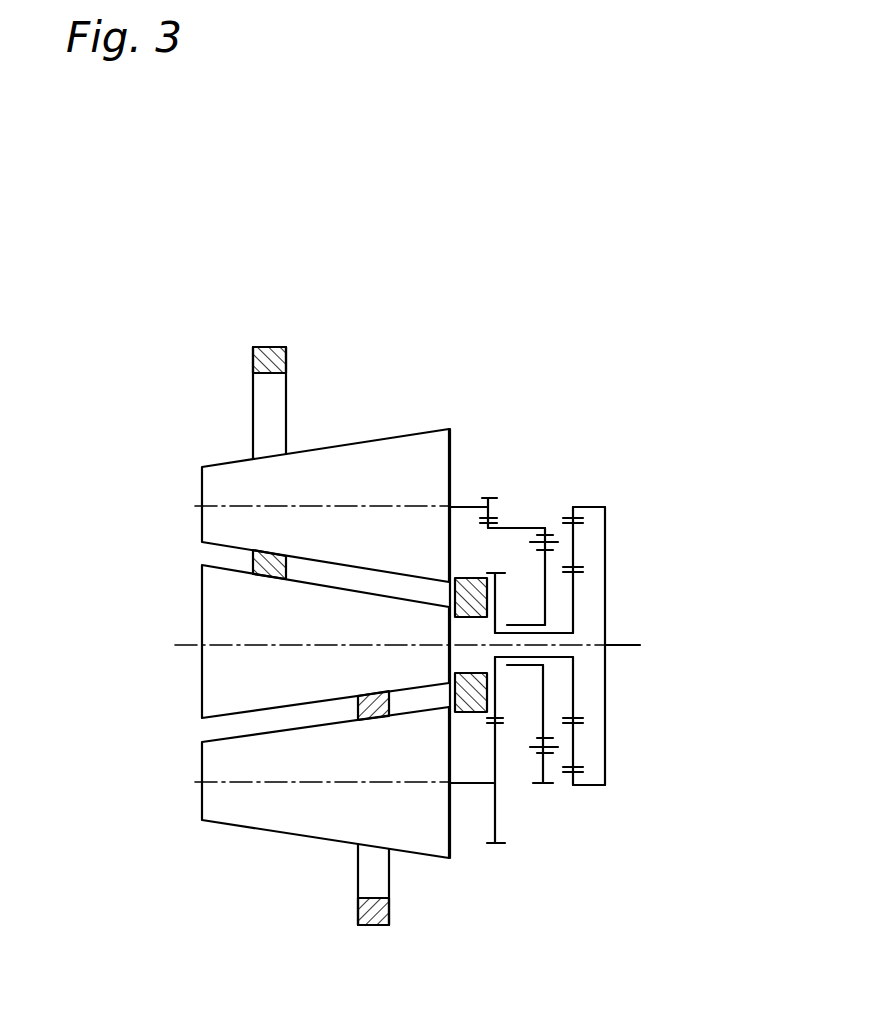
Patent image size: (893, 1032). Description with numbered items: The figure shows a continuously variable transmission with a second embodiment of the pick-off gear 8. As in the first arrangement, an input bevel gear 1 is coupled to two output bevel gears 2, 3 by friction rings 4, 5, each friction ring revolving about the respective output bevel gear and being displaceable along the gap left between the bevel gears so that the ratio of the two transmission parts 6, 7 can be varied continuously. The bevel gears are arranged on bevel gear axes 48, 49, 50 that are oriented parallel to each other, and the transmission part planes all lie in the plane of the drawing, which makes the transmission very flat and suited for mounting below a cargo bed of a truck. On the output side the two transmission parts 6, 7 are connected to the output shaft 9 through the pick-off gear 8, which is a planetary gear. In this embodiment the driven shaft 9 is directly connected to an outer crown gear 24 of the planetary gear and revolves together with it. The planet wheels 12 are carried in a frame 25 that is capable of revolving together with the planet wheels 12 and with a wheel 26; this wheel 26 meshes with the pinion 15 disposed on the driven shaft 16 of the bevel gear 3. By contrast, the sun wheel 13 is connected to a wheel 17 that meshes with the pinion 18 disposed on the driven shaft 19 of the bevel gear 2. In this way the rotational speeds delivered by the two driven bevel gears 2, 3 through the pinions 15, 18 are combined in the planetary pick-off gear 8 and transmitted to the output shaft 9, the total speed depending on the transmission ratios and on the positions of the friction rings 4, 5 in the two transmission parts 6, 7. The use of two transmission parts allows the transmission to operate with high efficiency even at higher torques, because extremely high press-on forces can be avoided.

The input bevel gear 1 is at (213, 690).
The output bevel gear 2 is at (212, 808).
The output bevel gear 3 is at (210, 487).
The friction ring 4 is at (357, 917).
The friction ring 5 is at (255, 362).
The transmission part 6 is at (155, 753).
The transmission part 7 is at (170, 548).
The pick-off gear 8 is at (563, 342).
The output shaft 9 is at (628, 646).
The planet wheels 12 is at (577, 533).
The sun wheel 13 is at (573, 675).
The pinion 15 is at (497, 505).
The driven shaft 16 is at (461, 507).
The wheel 17 is at (540, 698).
The pinion 18 is at (497, 833).
The driven shaft 19 is at (468, 783).
The outer crown gear 24 is at (568, 512).
The frame 25 is at (540, 597).
The wheel 26 is at (497, 523).
The bevel gear axis 48 is at (200, 504).
The bevel gear axis 49 is at (187, 642).
The bevel gear axis 50 is at (212, 780).